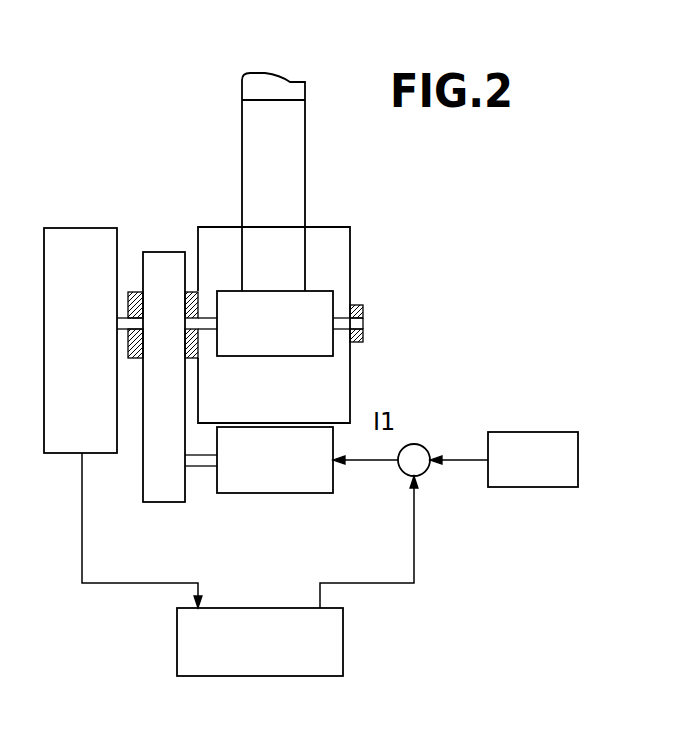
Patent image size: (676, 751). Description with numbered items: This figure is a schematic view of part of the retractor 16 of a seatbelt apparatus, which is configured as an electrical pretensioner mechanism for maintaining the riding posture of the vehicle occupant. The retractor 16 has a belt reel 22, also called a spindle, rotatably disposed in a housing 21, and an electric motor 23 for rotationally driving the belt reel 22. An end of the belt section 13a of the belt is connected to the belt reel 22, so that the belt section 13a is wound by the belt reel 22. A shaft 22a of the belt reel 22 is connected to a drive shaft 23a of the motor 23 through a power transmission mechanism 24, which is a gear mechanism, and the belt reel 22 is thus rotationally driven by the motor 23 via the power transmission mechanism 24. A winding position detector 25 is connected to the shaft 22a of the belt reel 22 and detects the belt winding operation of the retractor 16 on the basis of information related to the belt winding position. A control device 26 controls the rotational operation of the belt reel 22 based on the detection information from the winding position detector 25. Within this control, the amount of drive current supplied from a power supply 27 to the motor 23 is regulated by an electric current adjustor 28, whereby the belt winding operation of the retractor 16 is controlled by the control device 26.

The belt section 13a is at (290, 140).
The retractor 16 is at (390, 320).
The housing 21 is at (350, 248).
The belt reel 22 is at (322, 300).
The shaft 22a is at (210, 314).
The electric motor 23 is at (276, 494).
The drive shaft 23a is at (201, 462).
The power transmission mechanism 24 is at (150, 260).
The winding position detector 25 is at (64, 228).
The control device 26 is at (345, 630).
The power supply 27 is at (559, 432).
The electric current adjustor 28 is at (415, 444).